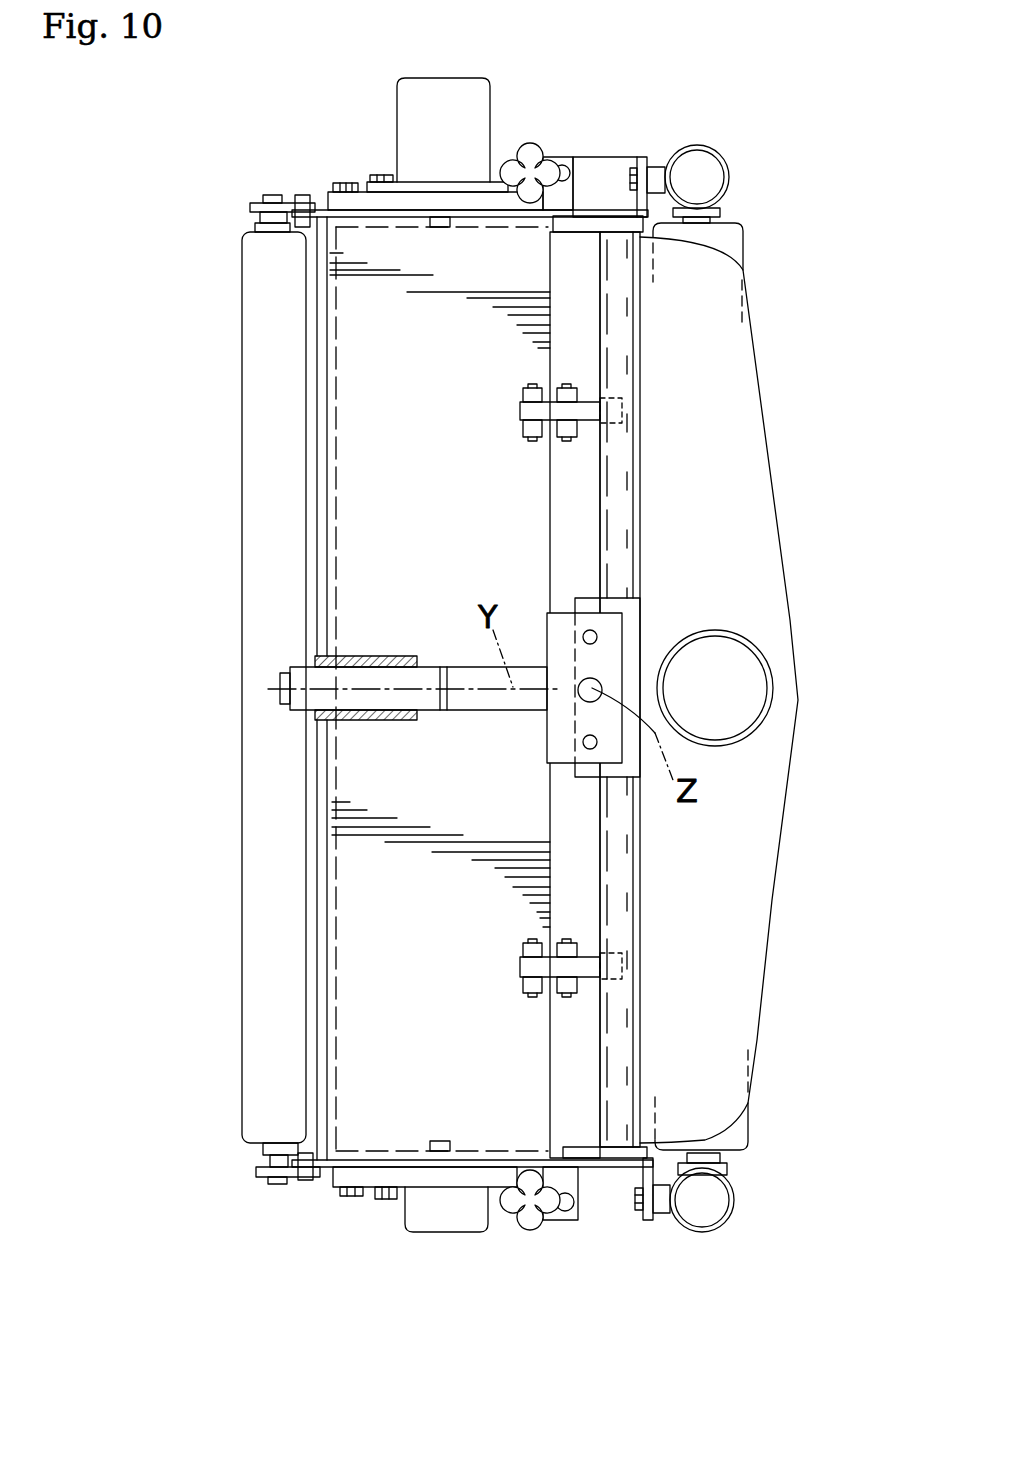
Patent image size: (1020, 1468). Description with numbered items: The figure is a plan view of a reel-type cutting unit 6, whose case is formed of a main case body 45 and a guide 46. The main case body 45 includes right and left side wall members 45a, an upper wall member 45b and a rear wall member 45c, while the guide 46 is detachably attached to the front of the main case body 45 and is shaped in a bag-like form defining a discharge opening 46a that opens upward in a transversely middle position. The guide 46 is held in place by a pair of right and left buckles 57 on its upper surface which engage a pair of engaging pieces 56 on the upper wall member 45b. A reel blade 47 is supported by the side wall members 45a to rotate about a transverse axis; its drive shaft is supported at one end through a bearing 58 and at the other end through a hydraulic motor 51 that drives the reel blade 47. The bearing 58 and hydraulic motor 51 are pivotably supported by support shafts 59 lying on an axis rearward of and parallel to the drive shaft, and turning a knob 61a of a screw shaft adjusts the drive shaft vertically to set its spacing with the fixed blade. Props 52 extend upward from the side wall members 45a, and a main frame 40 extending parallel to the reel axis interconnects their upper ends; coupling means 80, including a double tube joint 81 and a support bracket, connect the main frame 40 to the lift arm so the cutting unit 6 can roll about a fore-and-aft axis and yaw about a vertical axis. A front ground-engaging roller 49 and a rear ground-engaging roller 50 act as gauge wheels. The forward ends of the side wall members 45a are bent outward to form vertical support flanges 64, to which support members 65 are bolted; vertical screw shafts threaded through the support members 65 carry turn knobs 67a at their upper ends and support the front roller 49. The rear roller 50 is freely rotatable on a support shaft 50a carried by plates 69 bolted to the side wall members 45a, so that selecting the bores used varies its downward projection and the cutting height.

The reel-type cutting unit 6 is at (786, 174).
The main frame 40 is at (637, 365).
The main case body 45 is at (312, 303).
The side wall members 45a is at (462, 216).
The upper wall member 45b is at (361, 376).
The rear wall member 45c is at (312, 922).
The guide 46 is at (760, 448).
The discharge opening 46a is at (713, 655).
The reel blade 47 is at (335, 565).
The front ground-engaging roller 49 is at (745, 256).
The rear ground-engaging roller 50 is at (258, 470).
The support shaft 50a is at (278, 197).
The hydraulic motor 51 is at (482, 108).
The props 52 is at (585, 235).
The engaging pieces 56 is at (520, 437).
The buckles 57 is at (585, 396).
The bearing 58 is at (452, 1225).
The support shafts 59 is at (352, 183).
The knob 61a is at (530, 160).
The support flanges 64 is at (636, 157).
The support members 65 is at (655, 168).
The turn knob 67a is at (693, 155).
The plate 69 is at (252, 205).
The coupling means 80 is at (460, 645).
The double tube joint 81 is at (470, 712).